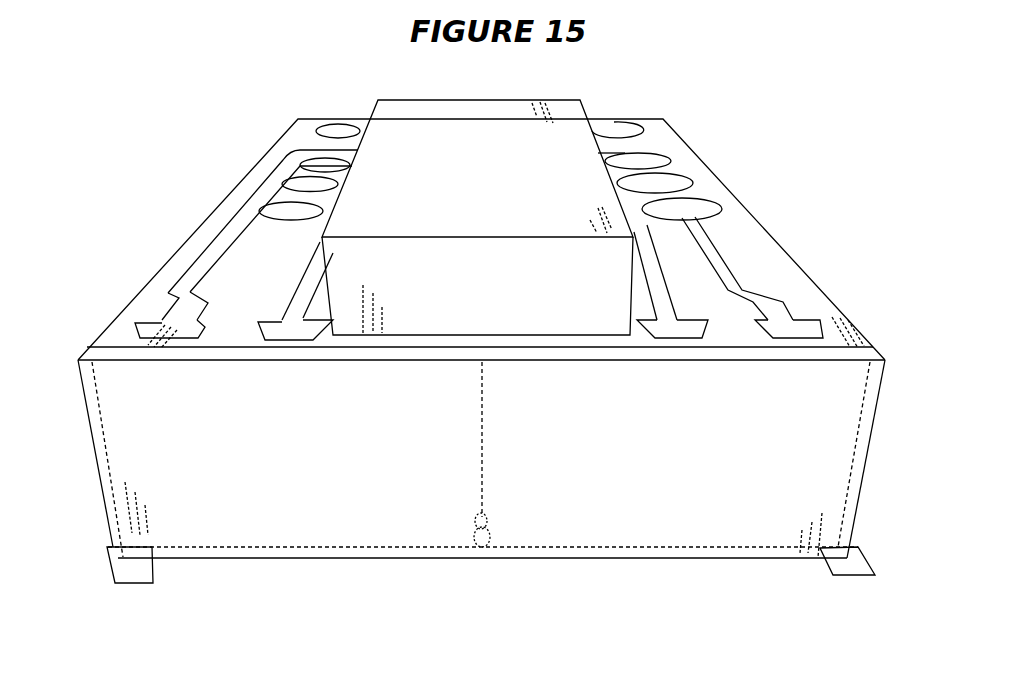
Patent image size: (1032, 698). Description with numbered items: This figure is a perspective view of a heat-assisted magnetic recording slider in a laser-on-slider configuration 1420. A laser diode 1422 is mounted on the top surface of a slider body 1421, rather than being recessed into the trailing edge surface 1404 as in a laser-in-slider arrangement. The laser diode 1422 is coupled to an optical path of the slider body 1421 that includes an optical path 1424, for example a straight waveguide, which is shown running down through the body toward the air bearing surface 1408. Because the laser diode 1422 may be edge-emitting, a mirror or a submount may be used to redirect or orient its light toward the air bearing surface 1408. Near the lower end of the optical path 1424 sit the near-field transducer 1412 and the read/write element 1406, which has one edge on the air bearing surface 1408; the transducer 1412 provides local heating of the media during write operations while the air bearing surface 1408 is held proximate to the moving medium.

The trailing edge surface 1404 is at (138, 583).
The read/write element 1406 is at (488, 547).
The air bearing surface 1408 is at (867, 577).
The near-field transducer 1412 is at (480, 548).
The laser-on-slider configuration 1420 is at (787, 163).
The slider body 1421 is at (125, 310).
The laser diode 1422 is at (565, 108).
The optical path 1424 is at (482, 437).